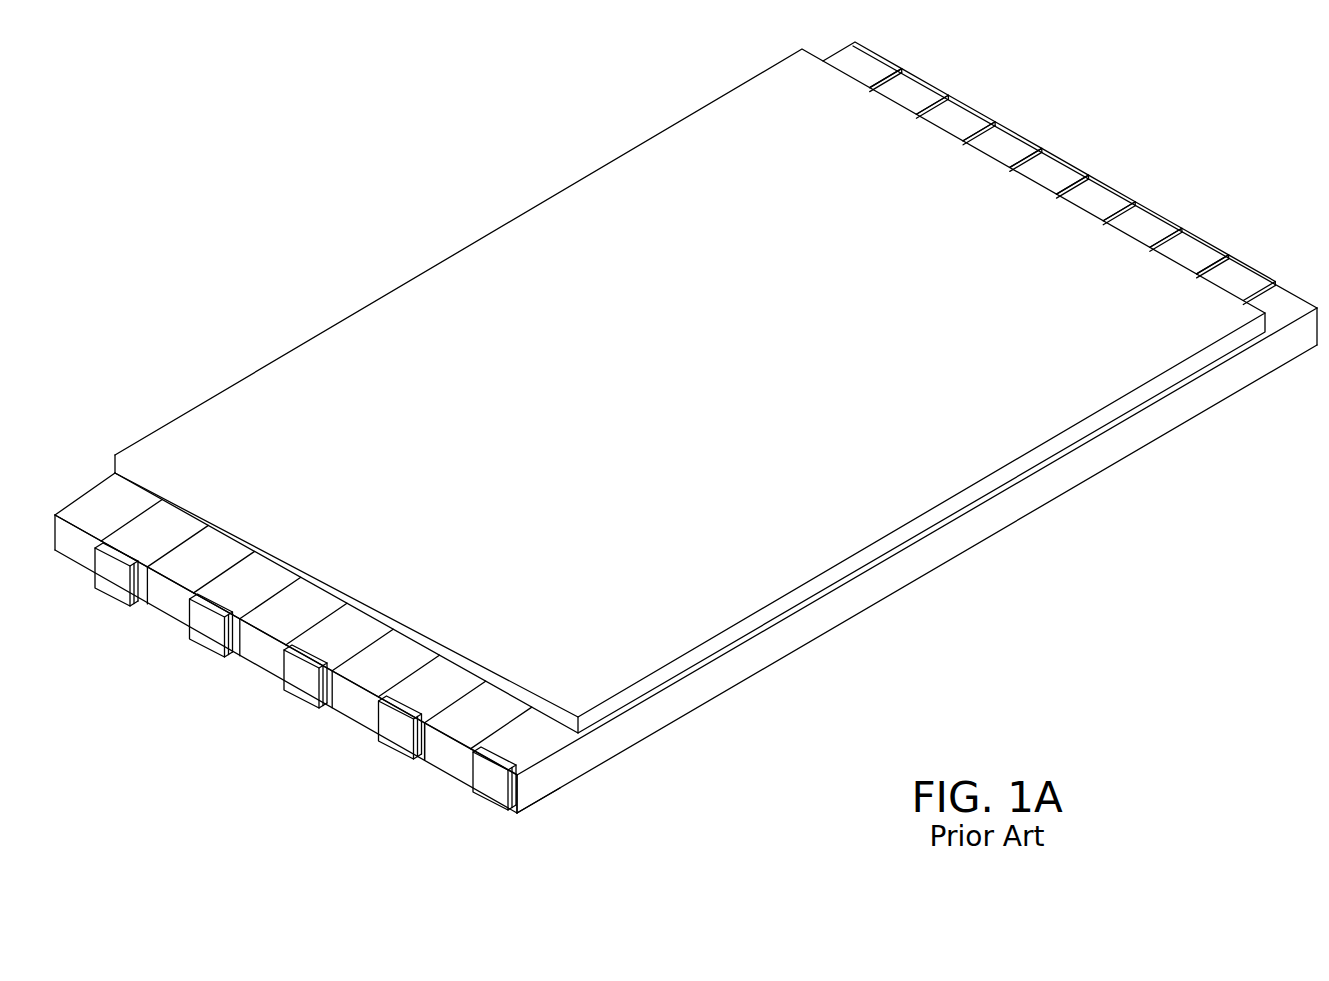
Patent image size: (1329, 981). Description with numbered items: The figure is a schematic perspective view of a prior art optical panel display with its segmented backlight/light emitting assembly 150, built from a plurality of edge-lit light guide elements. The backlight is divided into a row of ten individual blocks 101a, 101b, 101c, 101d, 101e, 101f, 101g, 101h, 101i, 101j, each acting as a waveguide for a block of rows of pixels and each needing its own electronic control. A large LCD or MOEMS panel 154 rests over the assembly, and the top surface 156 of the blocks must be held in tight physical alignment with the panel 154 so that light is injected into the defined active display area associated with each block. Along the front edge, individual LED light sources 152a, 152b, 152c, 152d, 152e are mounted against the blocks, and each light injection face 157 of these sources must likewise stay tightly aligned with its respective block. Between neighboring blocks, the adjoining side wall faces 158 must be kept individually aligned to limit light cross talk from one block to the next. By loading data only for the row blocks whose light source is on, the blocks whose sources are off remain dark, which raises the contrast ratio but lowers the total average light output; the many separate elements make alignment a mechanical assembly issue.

The segmented backlight/light emitting assembly 150 is at (681, 453).
The LCD or MOEMS panel 154 is at (690, 391).
The top surface 156 is at (793, 610).
The light injection face 157 is at (519, 793).
The adjoining side wall face 158 is at (484, 746).
The block 101a is at (87, 507).
The block 101b is at (139, 533).
The block 101c is at (182, 564).
The block 101d is at (233, 584).
The block 101e is at (284, 616).
The block 101f is at (329, 637).
The block 101g is at (377, 668).
The block 101h is at (420, 689).
The block 101i is at (464, 720).
The block 101j is at (506, 741).
The LED light source 152a is at (118, 577).
The LED light source 152b is at (211, 632).
The LED light source 152c is at (300, 681).
The LED light source 152d is at (392, 731).
The LED light source 152e is at (492, 783).